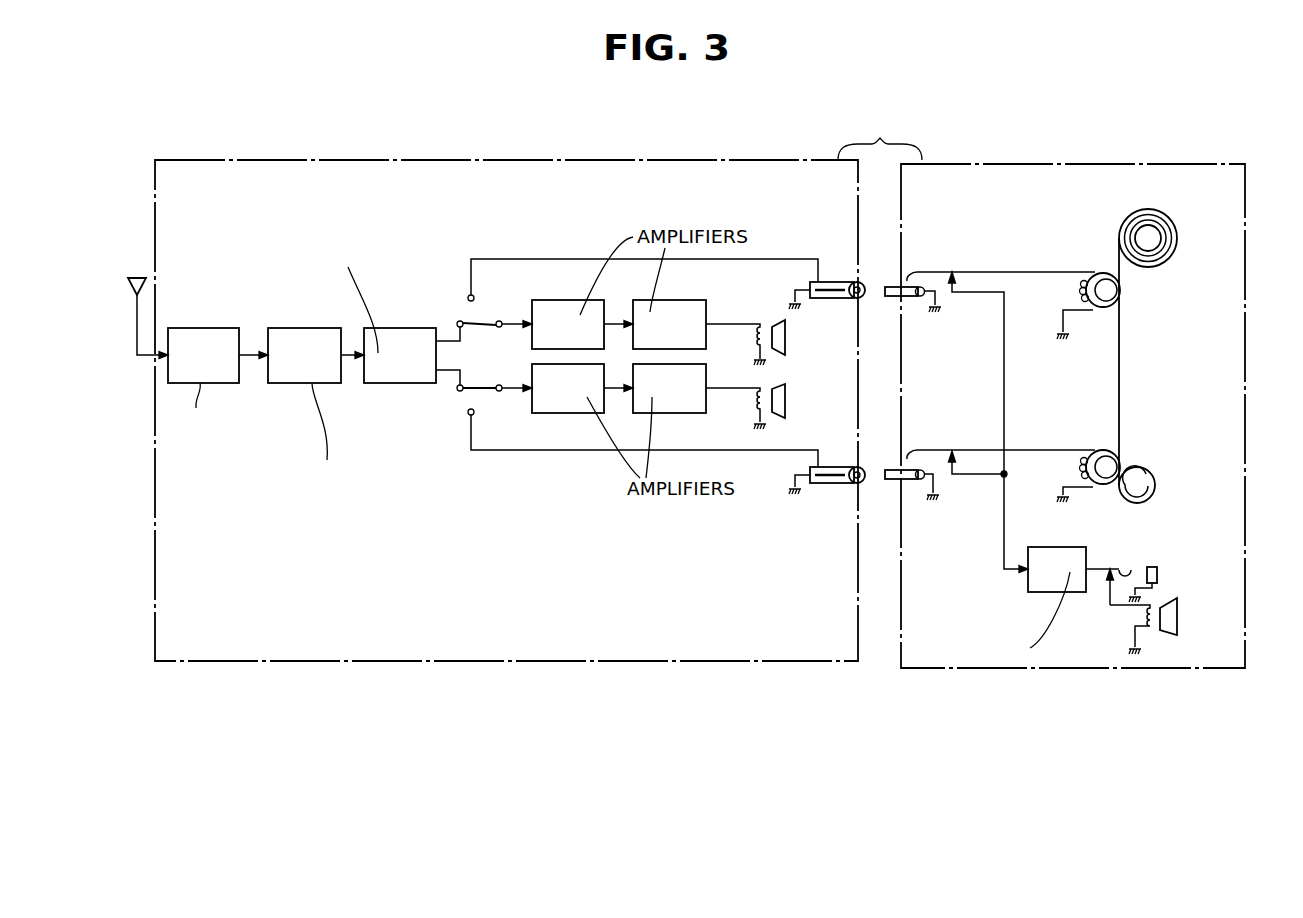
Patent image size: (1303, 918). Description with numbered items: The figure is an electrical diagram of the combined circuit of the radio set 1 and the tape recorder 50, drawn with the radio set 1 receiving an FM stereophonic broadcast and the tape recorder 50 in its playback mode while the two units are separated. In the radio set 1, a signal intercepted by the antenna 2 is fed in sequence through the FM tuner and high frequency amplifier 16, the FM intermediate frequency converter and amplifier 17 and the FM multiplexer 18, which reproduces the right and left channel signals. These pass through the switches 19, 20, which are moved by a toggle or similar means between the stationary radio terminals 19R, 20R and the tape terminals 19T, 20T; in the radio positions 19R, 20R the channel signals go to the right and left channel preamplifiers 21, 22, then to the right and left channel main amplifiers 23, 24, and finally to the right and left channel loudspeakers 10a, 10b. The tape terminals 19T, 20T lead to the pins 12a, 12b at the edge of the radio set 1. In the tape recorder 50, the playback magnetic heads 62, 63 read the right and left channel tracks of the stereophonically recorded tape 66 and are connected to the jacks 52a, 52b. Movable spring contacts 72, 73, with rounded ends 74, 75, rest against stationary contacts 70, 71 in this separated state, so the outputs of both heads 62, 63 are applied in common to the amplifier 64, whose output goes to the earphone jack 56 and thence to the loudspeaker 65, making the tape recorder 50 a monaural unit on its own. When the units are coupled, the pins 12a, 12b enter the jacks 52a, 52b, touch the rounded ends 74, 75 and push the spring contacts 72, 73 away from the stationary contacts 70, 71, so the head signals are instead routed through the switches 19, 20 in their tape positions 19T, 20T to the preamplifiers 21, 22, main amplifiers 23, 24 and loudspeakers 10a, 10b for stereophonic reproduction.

The radio set 1 is at (352, 160).
The tape recorder 50 is at (1053, 170).
The antenna 2 is at (136, 332).
The FM tuner and high frequency amplifier 16 is at (217, 333).
The FM intermediate frequency converter and amplifier 17 is at (313, 333).
The FM multiplexer 18 is at (380, 333).
The switch 19 is at (458, 318).
The radio position stationary terminal 19R is at (457, 323).
The tape position stationary terminal 19T is at (473, 296).
The switch 20 is at (459, 392).
The radio position stationary terminal 20R is at (457, 389).
The tape position stationary terminal 20T is at (473, 414).
The right channel preamplifier 21 is at (565, 308).
The left channel preamplifier 22 is at (590, 409).
The right channel main amplifier 23 is at (690, 308).
The left channel main amplifier 24 is at (683, 406).
The right channel loudspeaker 10a is at (785, 340).
The left channel loudspeaker 10b is at (785, 400).
The pin 12a is at (833, 282).
The pin 12b is at (843, 483).
The jack 52a is at (892, 285).
The jack 52b is at (893, 468).
The rounded end of movable spring contact 74 is at (909, 276).
The movable spring contact 72 is at (977, 272).
The stationary contact 70 is at (955, 282).
The stationary contact 71 is at (953, 476).
The movable spring contact 73 is at (960, 451).
The rounded end of movable spring contact 75 is at (917, 455).
The playback magnetic head 62 is at (1100, 273).
The playback magnetic head 63 is at (1100, 450).
The stereophonically recorded tape 66 is at (1119, 415).
The amplifier 64 is at (1045, 592).
The earphone jack 56 is at (1155, 567).
The loudspeaker 65 is at (1177, 615).